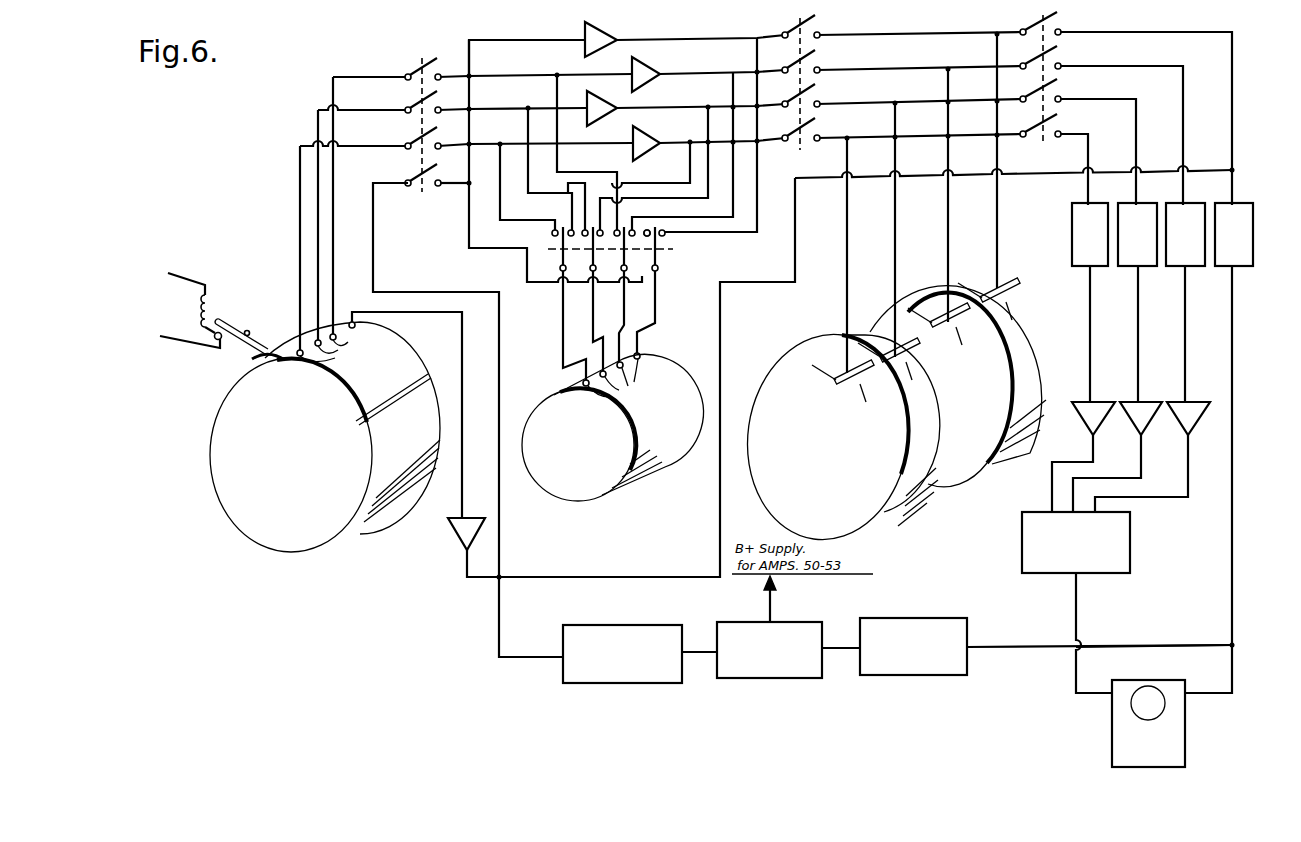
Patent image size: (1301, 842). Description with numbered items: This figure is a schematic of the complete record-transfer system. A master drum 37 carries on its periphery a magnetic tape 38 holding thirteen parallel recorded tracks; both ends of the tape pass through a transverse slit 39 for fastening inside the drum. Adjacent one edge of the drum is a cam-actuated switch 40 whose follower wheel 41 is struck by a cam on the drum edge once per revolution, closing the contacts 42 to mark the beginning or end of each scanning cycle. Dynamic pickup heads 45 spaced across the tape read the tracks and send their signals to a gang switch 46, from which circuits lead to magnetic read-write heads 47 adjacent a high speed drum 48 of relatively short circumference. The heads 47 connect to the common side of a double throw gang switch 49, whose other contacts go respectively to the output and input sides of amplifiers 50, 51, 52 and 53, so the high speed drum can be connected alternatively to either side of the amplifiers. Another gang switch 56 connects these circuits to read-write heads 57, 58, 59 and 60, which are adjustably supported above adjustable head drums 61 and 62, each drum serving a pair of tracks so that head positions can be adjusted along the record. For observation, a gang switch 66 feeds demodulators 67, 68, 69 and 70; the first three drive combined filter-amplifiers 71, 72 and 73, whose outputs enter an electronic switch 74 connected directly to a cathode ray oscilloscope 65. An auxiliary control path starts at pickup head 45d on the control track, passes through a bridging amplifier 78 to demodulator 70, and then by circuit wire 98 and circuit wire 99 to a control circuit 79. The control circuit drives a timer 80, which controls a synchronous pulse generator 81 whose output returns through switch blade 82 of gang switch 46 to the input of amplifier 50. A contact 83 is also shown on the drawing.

The master drum 37 is at (325, 538).
The magnetic tape 38 is at (392, 357).
The transverse slit 39 is at (431, 376).
The cam-actuated switch 40 is at (236, 326).
The follower wheel 41 is at (277, 362).
The contacts 42 is at (214, 337).
The dynamic pickup heads 45 is at (340, 352).
The pickup head 45d is at (374, 332).
The gang switch 46 is at (416, 68).
The magnetic read-write heads 47 is at (616, 396).
The high speed drum 48 is at (589, 490).
The double throw gang switch 49 is at (676, 250).
The amplifier 50 is at (604, 40).
The amplifier 51 is at (645, 74).
The amplifier 52 is at (597, 108).
The amplifier 53 is at (645, 143).
The gang switch 56 is at (802, 144).
The read-write head 57 is at (864, 372).
The read-write head 58 is at (910, 363).
The read-write head 59 is at (960, 320).
The read-write head 60 is at (1010, 300).
The adjustable head drum 61 is at (885, 522).
The adjustable head drum 62 is at (977, 468).
The cathode ray oscilloscope 65 is at (1175, 752).
The gang switch 66 is at (1042, 143).
The demodulator 67 is at (1104, 266).
The demodulator 68 is at (1152, 266).
The demodulator 69 is at (1200, 266).
The demodulator 70 is at (1248, 266).
The combined filter-amplifier 71 is at (1103, 422).
The combined filter-amplifier 72 is at (1150, 422).
The combined filter-amplifier 73 is at (1197, 422).
The electronic switch 74 is at (1125, 552).
The bridging amplifier 78 is at (460, 534).
The control circuit 79 is at (935, 675).
The timer 80 is at (785, 678).
The synchronous pulse generator 81 is at (643, 683).
The switch blade 82 is at (411, 188).
The contact 83 is at (648, 229).
The circuit wire 98 is at (1238, 550).
The circuit wire 99 is at (1125, 646).